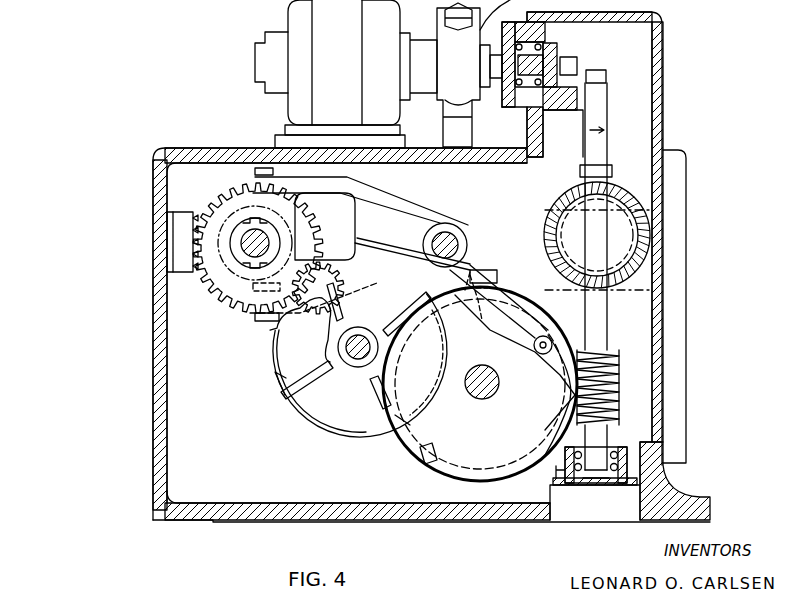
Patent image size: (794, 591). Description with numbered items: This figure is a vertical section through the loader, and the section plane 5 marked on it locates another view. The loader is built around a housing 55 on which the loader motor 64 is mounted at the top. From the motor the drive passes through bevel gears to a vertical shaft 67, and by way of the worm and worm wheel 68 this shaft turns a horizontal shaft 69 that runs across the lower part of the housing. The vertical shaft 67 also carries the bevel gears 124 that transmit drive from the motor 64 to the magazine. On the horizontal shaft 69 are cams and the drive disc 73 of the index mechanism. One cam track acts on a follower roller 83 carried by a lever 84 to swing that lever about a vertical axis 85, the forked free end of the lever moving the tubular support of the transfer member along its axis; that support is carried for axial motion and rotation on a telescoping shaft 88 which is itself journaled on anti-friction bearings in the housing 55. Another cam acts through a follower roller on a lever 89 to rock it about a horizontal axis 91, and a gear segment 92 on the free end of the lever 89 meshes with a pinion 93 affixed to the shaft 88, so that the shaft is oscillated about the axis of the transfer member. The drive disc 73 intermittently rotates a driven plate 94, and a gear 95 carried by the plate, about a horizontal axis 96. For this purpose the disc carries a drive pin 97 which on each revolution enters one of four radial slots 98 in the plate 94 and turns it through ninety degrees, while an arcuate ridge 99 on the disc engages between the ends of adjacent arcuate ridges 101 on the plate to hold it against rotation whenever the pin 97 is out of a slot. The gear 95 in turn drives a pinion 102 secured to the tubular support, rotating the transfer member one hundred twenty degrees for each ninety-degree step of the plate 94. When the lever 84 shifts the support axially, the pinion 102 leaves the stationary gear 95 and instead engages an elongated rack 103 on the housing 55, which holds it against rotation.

The section plane 5— 5 is at (165, 163).
The housing 55 is at (158, 345).
The loader motor 64 is at (350, 44).
The vertical shaft 67 is at (598, 306).
The worm and worm wheel 68 is at (603, 340).
The horizontal shaft 69 is at (490, 395).
The drive disc 73 is at (503, 465).
The follower roller 83 is at (478, 300).
The lever 84 is at (392, 202).
The vertical axis 85 is at (548, 282).
The telescoping shaft 88 is at (245, 232).
The lever 89 is at (430, 241).
The horizontal axis 91 is at (458, 240).
The gear segment 92 is at (287, 258).
The pinion 93 is at (318, 257).
The driven plate 94 is at (333, 418).
The gear 95 is at (262, 338).
The horizontal axis 96 is at (362, 332).
The drive pin 97 is at (565, 408).
The radial slots 98 is at (312, 373).
The arcuate ridge 99 is at (422, 452).
The arcuate ridges 101 is at (277, 385).
The pinion 102 is at (218, 285).
The elongated rack 103 is at (178, 263).
The bevel gears 124 is at (675, 200).